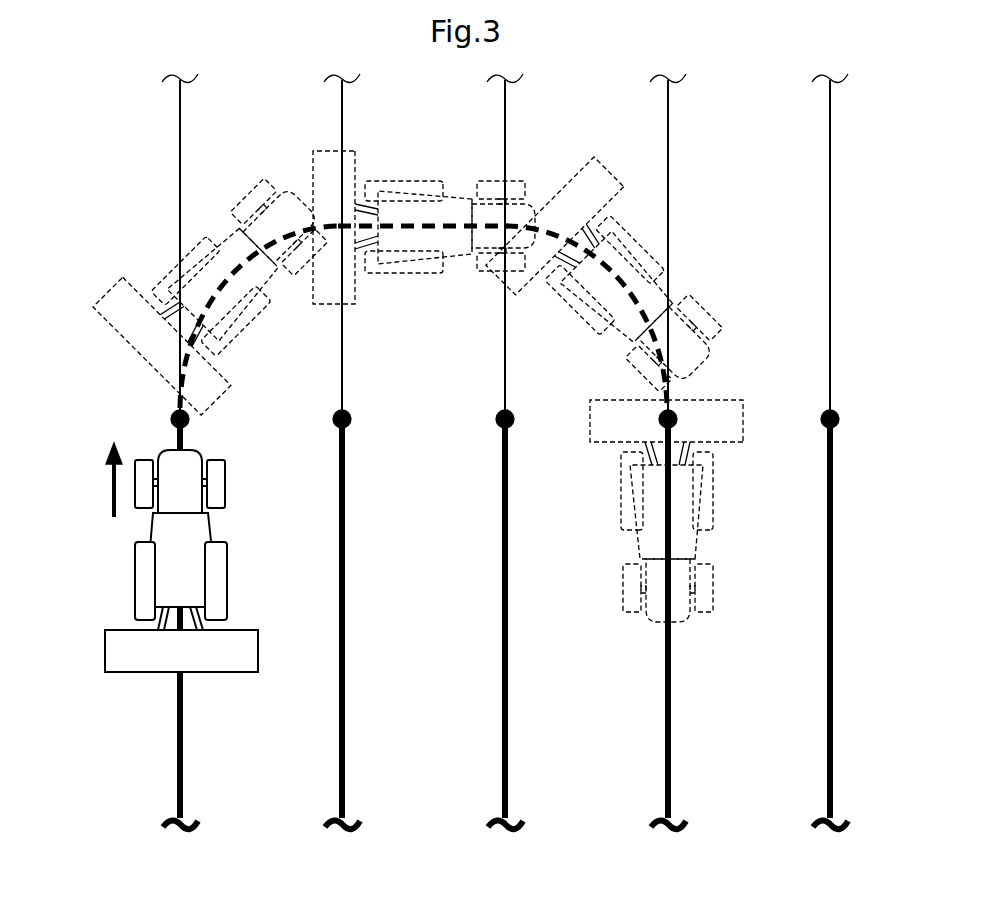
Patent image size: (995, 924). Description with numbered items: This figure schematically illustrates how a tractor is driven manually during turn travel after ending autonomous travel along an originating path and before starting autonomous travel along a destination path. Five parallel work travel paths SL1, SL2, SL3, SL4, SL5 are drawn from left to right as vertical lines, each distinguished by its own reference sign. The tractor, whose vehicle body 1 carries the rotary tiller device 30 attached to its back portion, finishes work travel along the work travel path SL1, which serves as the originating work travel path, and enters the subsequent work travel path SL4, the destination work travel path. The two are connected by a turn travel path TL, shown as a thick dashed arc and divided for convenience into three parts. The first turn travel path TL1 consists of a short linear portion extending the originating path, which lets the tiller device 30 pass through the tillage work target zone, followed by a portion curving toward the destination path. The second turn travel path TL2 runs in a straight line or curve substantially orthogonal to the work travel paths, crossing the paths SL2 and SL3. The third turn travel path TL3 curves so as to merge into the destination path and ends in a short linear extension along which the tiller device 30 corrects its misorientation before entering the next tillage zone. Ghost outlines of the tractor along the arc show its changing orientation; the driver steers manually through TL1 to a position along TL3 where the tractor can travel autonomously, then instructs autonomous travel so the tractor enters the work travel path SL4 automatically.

The vehicle body 1 is at (145, 528).
The rotary tiller device 30 is at (112, 652).
The work travel path SL1 is at (179, 751).
The work travel path SL2 is at (341, 751).
The work travel path SL3 is at (504, 751).
The work travel path SL4 is at (667, 751).
The work travel path SL5 is at (829, 751).
The turn travel path TL is at (418, 266).
The first turn travel path TL1 is at (233, 250).
The second turn travel path TL2 is at (420, 222).
The third turn travel path TL3 is at (630, 245).